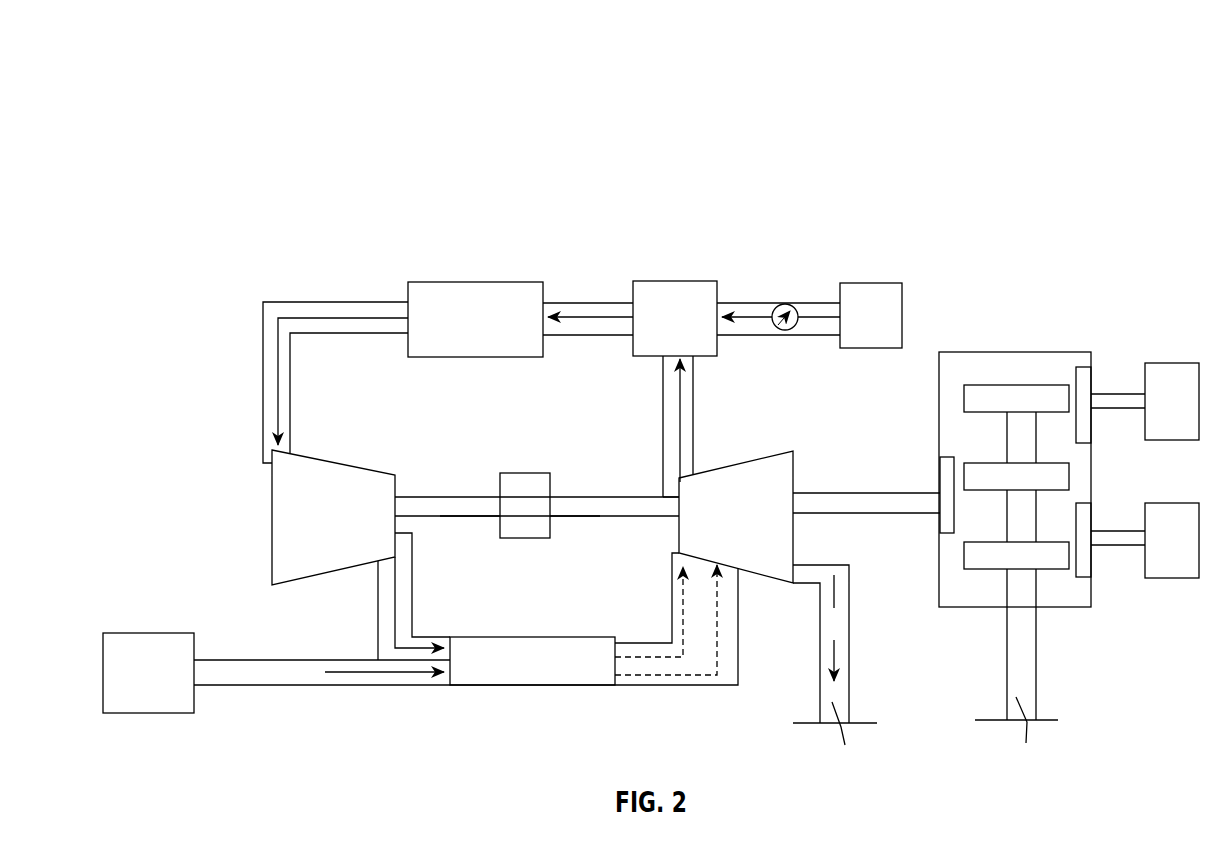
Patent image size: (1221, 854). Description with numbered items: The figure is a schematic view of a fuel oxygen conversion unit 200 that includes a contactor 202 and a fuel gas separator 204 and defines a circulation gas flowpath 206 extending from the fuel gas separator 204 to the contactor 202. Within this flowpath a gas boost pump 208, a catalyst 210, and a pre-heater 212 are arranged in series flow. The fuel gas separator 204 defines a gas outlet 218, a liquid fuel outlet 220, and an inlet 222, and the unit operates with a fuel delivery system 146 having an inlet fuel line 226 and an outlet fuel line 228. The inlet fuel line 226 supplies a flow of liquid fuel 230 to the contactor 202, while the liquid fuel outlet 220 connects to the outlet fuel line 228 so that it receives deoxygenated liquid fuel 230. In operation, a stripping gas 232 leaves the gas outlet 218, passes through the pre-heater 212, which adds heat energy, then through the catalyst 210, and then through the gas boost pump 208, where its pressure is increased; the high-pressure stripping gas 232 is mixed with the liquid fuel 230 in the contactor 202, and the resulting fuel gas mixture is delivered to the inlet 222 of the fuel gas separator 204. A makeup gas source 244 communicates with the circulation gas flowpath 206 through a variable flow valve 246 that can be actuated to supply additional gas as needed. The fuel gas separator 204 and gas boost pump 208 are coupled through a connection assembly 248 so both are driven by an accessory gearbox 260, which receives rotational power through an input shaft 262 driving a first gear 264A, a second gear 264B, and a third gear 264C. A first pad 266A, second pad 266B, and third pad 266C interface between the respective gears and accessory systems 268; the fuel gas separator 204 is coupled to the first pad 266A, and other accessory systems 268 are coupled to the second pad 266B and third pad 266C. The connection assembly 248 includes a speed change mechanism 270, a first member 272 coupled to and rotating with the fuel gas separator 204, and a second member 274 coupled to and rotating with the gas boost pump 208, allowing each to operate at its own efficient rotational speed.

The fuel oxygen conversion unit 200 is at (678, 124).
The contactor 202 is at (530, 636).
The fuel gas separator 204 is at (782, 480).
The circulation gas flowpath 206 is at (298, 302).
The gas boost pump 208 is at (352, 462).
The catalyst 210 is at (470, 297).
The pre-heater 212 is at (677, 281).
The gas outlet 218 is at (668, 480).
The liquid fuel outlet 220 is at (802, 583).
The inlet 222 is at (696, 568).
The inlet fuel line 226 is at (337, 687).
The outlet fuel line 228 is at (850, 692).
The liquid fuel 230 is at (412, 673).
The stripping gas 232 is at (278, 378).
The makeup gas source 244 is at (878, 296).
The variable flow valve 246 is at (787, 296).
The connection assembly 248 is at (501, 451).
The accessory gearbox 260 is at (986, 344).
The input shaft 262 is at (1037, 690).
The first gear 264A is at (1058, 477).
The second gear 264B is at (1023, 388).
The third gear 264C is at (974, 555).
The first pad 266A is at (940, 478).
The second pad 266B is at (1082, 377).
The third pad 266C is at (1082, 565).
The accessory system 268 is at (1170, 363).
The speed change mechanism 270 is at (520, 540).
The first member 272 is at (563, 518).
The second member 274 is at (467, 518).
The fuel delivery system 146 is at (301, 729).